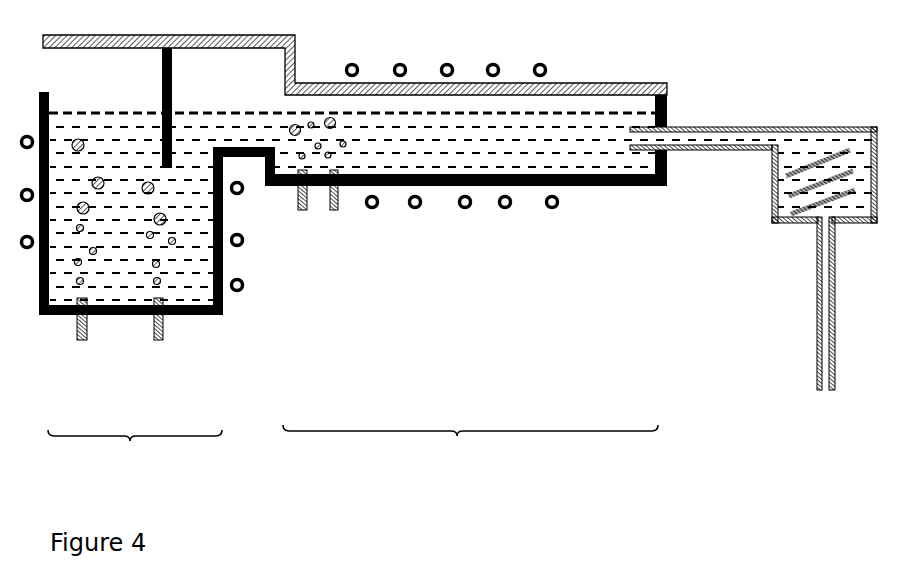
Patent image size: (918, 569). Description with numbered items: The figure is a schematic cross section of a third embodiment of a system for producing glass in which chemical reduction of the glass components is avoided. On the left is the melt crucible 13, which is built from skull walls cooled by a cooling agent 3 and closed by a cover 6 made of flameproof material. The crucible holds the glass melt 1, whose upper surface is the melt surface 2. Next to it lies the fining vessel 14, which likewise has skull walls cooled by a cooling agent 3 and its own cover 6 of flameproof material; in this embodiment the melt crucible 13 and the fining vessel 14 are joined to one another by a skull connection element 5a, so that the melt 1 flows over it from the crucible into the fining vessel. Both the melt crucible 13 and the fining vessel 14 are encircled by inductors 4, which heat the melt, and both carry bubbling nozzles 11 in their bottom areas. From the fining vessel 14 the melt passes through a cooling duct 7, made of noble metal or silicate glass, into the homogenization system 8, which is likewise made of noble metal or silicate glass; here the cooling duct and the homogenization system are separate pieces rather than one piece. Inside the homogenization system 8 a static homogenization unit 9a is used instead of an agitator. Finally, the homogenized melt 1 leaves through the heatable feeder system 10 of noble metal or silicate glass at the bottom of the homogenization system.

The glass melt 1 is at (173, 258).
The melt surface 2 is at (201, 112).
The skull walls cooled by cooling agent 3 is at (49, 315).
The inductor 4 is at (410, 205).
The skull connection element 5a is at (240, 155).
The cover made of flame proof material 6 is at (138, 46).
The cooling duct made of noble metal or silicate glass 7 is at (706, 148).
The homogenization system made of noble metal or silicate glass 8 is at (790, 130).
The static homogenization unit made of noble metal 9a is at (813, 187).
The heatable feeder system made of noble metal or silicate glass 10 is at (817, 308).
The bubbling nozzles 11 is at (330, 187).
The melt crucible 13 is at (135, 453).
The fining vessel 14 is at (470, 450).